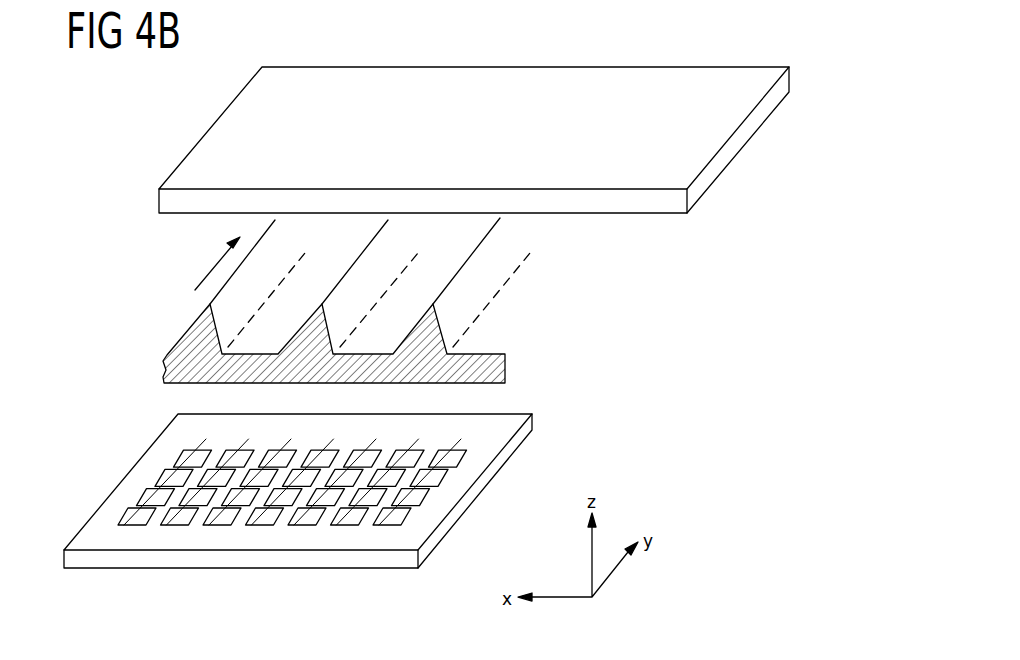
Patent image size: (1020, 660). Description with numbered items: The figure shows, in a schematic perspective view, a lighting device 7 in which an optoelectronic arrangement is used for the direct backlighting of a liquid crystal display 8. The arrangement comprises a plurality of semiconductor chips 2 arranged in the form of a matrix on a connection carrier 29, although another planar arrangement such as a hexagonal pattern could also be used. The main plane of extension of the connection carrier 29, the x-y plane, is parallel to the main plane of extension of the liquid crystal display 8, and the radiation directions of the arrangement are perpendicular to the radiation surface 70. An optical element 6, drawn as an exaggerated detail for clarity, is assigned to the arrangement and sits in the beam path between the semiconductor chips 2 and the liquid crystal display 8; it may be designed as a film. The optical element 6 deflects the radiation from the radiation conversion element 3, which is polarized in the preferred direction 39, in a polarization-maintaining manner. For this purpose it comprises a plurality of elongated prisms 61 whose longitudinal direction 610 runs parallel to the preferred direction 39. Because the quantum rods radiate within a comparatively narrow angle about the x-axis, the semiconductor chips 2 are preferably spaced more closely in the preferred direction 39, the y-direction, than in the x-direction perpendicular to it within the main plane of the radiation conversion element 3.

The liquid crystal display 8 is at (509, 77).
The longitudinal direction 610 is at (213, 265).
The radiation surface 70 is at (268, 348).
The elongated prisms 61 is at (385, 272).
The optical element 6 is at (361, 300).
The lighting device 7 is at (630, 312).
The preferred direction 39 is at (175, 477).
The radiation conversion element 3 is at (306, 491).
The connection carrier 29 is at (475, 493).
The semiconductor chips 2 is at (350, 527).